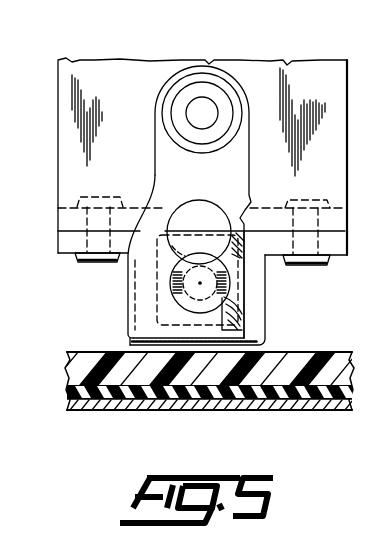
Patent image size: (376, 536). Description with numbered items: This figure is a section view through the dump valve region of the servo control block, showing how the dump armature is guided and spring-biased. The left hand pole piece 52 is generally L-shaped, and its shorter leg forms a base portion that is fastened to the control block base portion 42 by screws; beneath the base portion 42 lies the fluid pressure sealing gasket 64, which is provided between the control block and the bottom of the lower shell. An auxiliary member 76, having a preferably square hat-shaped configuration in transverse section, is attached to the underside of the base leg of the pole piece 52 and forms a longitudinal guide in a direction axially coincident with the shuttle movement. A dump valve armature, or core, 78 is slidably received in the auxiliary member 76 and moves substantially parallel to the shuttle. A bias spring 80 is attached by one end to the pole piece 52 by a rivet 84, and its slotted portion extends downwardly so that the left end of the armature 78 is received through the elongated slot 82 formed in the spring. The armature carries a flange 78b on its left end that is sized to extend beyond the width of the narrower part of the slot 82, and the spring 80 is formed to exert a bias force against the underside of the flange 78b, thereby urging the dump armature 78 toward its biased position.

The left hand pole piece 52 is at (58, 142).
The bias spring 80 is at (155, 150).
The rivet 84 is at (165, 90).
The elongated slot 82 is at (186, 221).
The dump valve armature 78 is at (244, 270).
The auxiliary member 76 is at (265, 296).
The flange 78b is at (232, 295).
The base portion 42 is at (84, 350).
The fluid pressure sealing gasket 64 is at (72, 391).